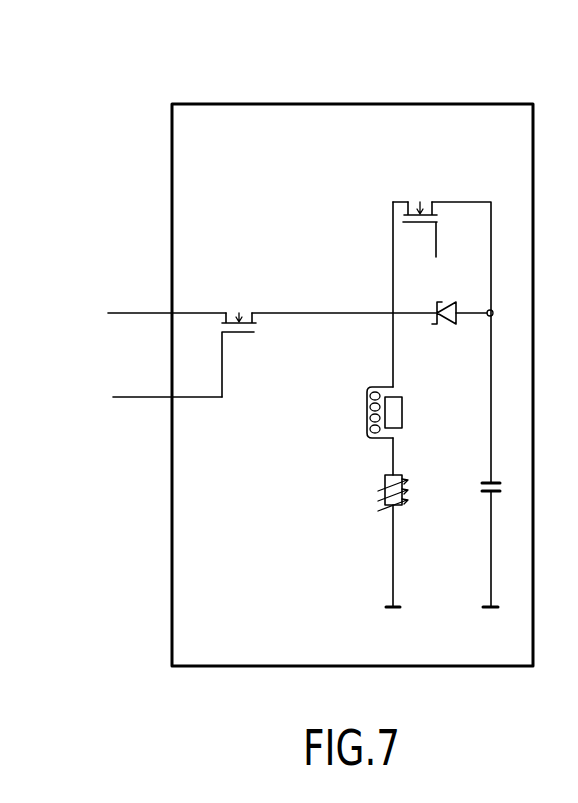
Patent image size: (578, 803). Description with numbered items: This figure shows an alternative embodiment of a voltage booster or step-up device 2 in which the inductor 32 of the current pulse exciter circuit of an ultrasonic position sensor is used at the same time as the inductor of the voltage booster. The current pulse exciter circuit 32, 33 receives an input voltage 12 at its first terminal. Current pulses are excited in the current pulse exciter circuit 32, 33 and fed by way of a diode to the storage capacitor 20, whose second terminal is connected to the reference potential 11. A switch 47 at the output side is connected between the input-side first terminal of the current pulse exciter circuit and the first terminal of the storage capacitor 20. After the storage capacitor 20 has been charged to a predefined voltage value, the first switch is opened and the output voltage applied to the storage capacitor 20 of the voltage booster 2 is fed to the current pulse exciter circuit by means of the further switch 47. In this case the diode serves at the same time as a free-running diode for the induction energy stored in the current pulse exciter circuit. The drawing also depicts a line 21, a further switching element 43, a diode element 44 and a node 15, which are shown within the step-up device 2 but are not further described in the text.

The voltage booster 2 is at (290, 104).
The input voltage 12 is at (133, 311).
The control line 21 is at (200, 398).
The transistor 43 is at (243, 311).
The switch at the output side 47 is at (412, 200).
The zener diode 44 is at (441, 325).
The output node 15 is at (497, 313).
The inductor 32 is at (366, 414).
The current pulse exciter circuit element 33 is at (380, 492).
The storage capacitor 20 is at (482, 488).
The reference potential 11 is at (400, 608).